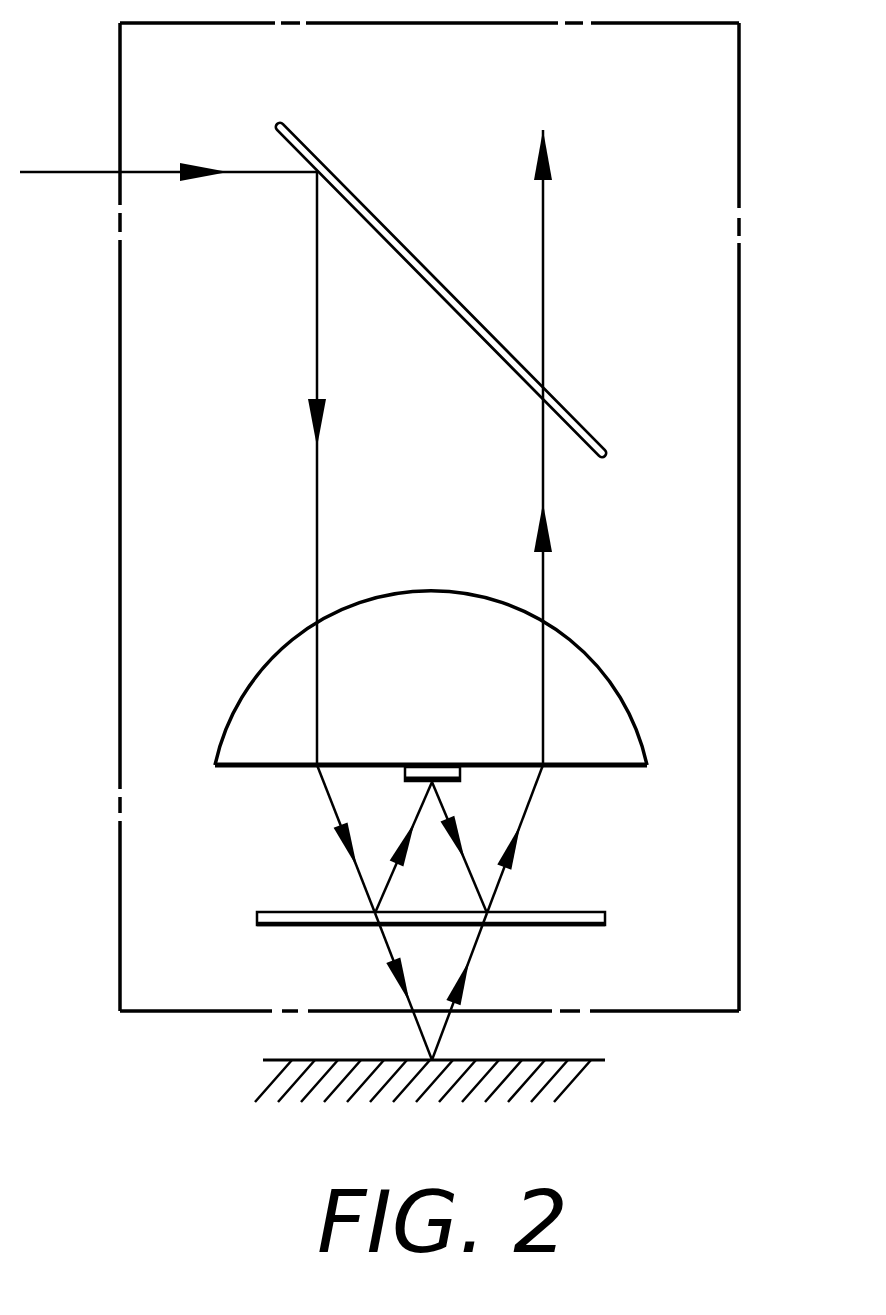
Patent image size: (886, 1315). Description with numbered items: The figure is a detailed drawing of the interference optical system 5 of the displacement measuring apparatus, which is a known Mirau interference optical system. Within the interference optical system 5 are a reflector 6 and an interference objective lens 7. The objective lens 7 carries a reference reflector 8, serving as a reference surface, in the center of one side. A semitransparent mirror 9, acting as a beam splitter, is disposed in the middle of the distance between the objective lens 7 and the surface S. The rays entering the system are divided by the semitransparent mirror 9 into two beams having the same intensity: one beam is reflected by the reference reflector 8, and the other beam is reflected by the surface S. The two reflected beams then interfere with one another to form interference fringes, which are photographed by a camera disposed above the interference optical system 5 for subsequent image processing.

The interference optical system 5 is at (739, 366).
The reflector 6 is at (426, 268).
The interference objective lens 7 is at (437, 590).
The reference reflector 8 is at (436, 765).
The semitransparent mirror 9 is at (568, 912).
The surface S is at (550, 1060).